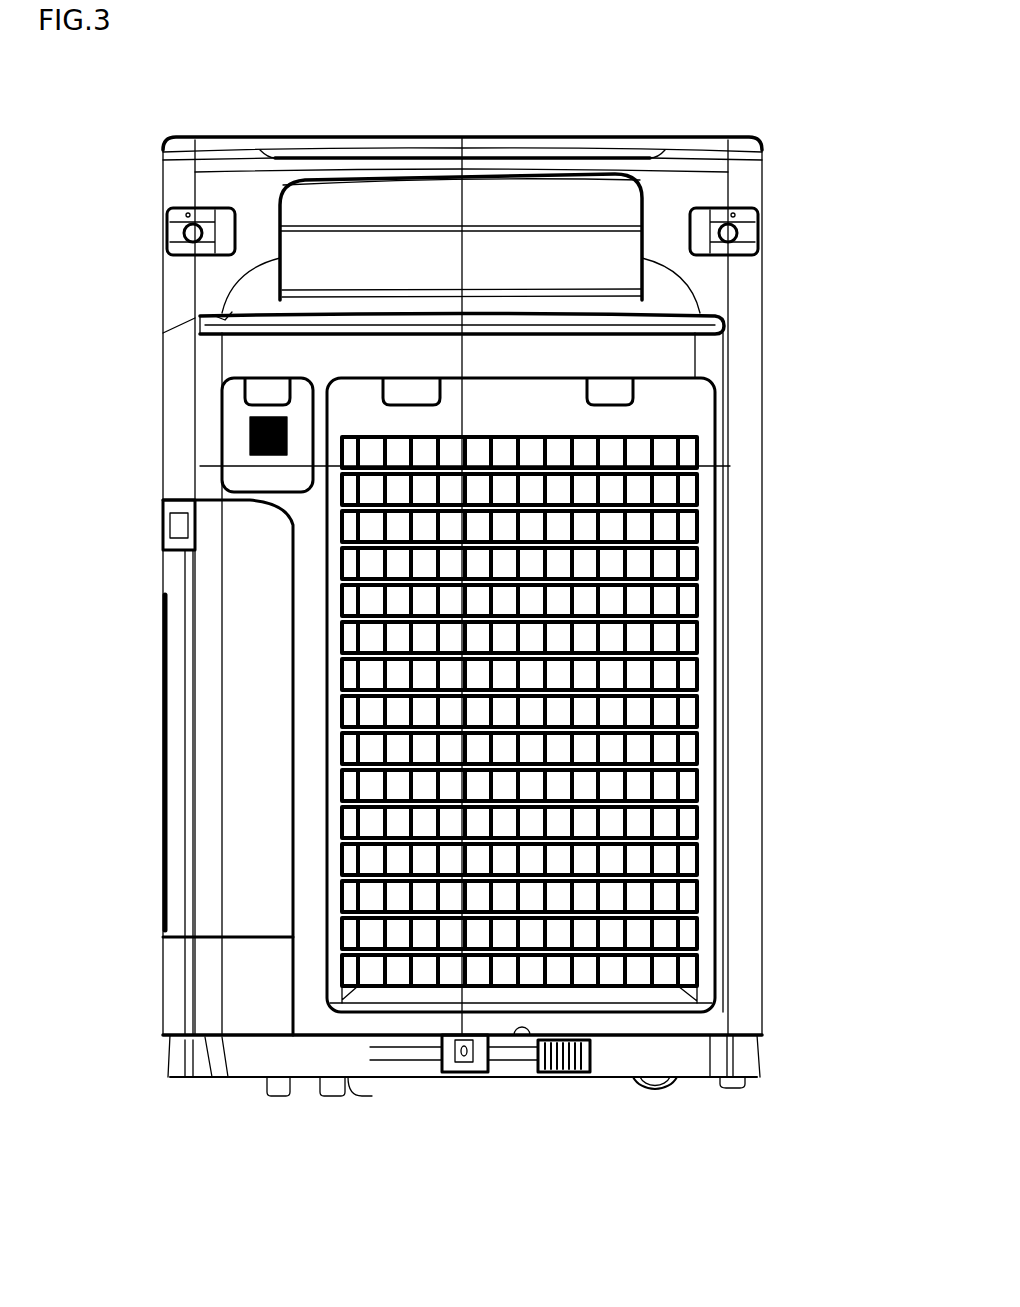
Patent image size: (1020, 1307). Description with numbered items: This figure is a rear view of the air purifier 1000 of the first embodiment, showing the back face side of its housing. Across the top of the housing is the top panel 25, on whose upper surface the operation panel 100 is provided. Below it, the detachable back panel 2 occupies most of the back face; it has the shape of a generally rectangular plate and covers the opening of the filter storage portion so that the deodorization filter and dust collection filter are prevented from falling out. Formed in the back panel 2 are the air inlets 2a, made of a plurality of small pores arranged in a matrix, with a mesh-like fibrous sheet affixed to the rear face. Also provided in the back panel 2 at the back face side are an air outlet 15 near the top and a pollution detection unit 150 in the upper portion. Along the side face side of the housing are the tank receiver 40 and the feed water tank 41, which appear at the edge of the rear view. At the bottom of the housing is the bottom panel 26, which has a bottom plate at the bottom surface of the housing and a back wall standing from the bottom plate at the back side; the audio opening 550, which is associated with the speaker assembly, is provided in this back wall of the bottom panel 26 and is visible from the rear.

The air purifier 1000 is at (754, 1125).
The operation panel 100 is at (389, 140).
The top panel 25 is at (665, 140).
The air outlet 15 is at (488, 198).
The pollution detection unit 150 is at (232, 437).
The back panel 2 is at (673, 407).
The air inlets 2a is at (640, 712).
The feed water tank 41 is at (178, 578).
The tank receiver 40 is at (178, 975).
The bottom panel 26 is at (620, 1063).
The audio opening 550 is at (571, 1075).